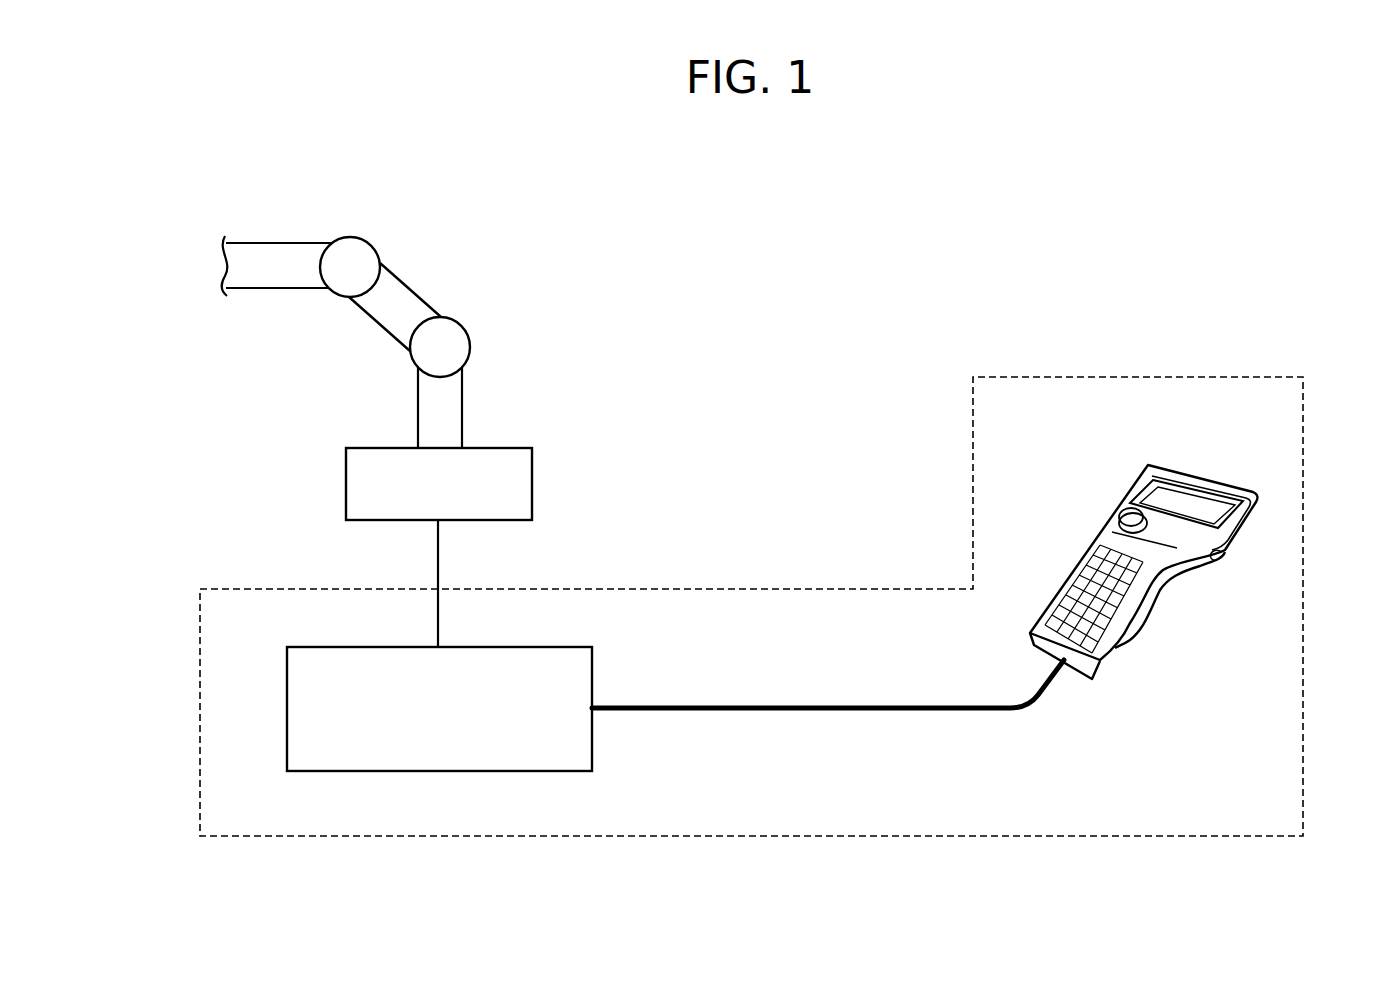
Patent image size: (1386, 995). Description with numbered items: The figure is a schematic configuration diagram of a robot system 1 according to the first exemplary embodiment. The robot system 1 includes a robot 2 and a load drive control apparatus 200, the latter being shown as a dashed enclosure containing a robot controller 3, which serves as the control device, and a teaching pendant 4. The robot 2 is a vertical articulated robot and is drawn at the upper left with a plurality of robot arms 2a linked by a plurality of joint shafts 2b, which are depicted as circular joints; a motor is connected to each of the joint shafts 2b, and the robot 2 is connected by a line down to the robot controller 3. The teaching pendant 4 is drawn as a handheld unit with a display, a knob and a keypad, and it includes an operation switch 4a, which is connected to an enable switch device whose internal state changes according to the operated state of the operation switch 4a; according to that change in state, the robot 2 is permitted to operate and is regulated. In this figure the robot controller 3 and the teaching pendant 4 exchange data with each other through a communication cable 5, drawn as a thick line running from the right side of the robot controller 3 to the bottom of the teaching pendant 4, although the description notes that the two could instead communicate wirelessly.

The robot system 1 is at (855, 333).
The robot 2 is at (476, 236).
The robot arm 2a is at (282, 255).
The joint shaft 2b is at (347, 273).
The robot controller 3 is at (287, 707).
The teaching pendant 4 is at (1232, 453).
The operation switch 4a is at (1198, 634).
The communication cable 5 is at (722, 697).
The load drive control apparatus 200 is at (1055, 366).